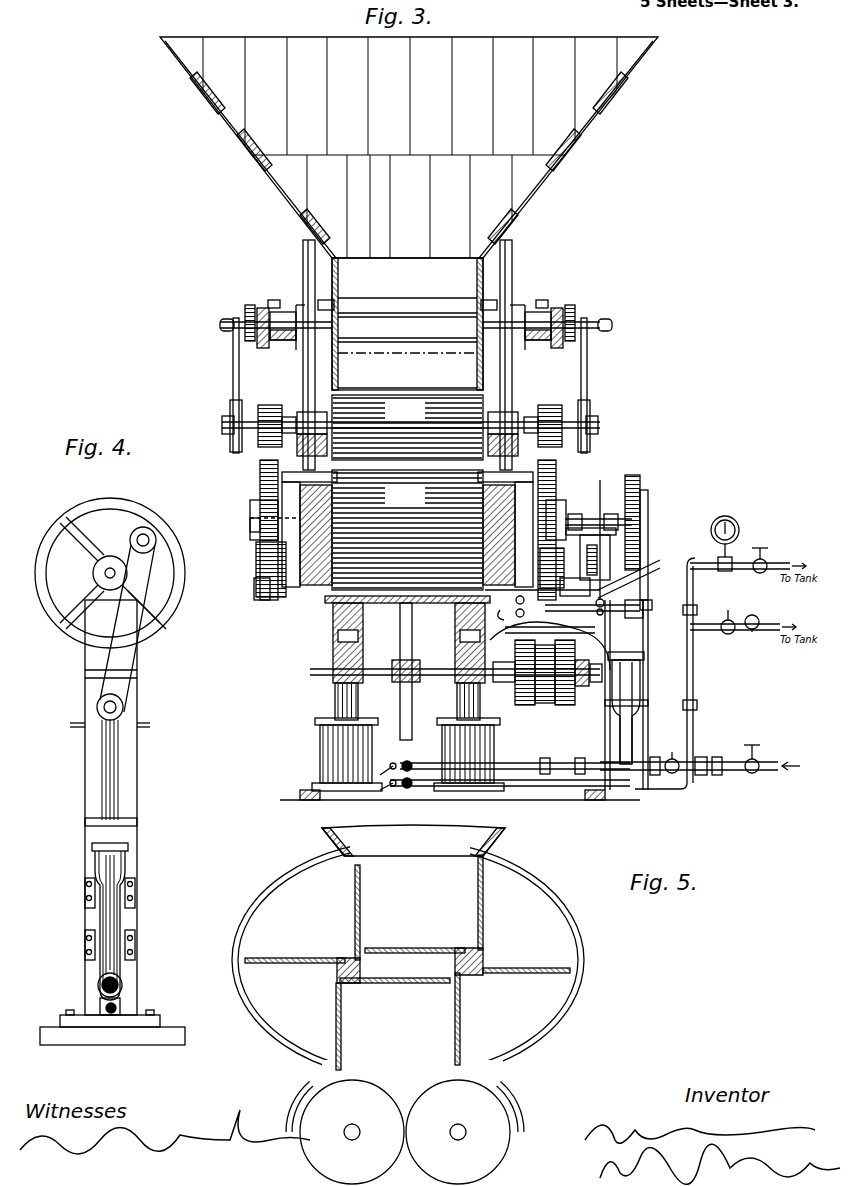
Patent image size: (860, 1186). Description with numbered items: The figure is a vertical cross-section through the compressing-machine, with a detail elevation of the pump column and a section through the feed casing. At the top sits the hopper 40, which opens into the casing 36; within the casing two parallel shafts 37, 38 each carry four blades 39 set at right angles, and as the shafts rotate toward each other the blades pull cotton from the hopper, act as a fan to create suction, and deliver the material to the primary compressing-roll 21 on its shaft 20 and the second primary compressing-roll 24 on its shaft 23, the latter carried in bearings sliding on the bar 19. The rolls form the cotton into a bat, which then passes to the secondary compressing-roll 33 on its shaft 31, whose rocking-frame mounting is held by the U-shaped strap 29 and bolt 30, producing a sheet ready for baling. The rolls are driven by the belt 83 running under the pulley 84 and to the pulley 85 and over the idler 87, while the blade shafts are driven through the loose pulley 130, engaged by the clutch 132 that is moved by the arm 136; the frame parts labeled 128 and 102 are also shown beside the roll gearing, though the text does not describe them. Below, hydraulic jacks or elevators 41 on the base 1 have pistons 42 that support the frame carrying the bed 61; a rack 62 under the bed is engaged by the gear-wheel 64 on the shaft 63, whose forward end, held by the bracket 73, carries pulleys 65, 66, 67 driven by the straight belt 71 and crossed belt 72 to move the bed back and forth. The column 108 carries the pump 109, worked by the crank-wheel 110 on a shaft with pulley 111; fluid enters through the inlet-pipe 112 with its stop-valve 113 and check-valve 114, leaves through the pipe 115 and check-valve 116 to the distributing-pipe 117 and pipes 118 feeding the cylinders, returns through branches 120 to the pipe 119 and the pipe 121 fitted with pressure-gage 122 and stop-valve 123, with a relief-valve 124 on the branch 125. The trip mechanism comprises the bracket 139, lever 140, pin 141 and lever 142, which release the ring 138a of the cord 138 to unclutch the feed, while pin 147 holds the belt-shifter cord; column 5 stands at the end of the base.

In FIG. 3, the base 1 is at (480, 796).
In FIG. 4, the base 1 is at (114, 1040).
In FIG. 3, the column 5 is at (482, 258).
In FIG. 3, the bar 19 is at (404, 439).
In FIG. 5, the shaft 20 is at (458, 1140).
In FIG. 3, the primary compressing-roll 21 is at (407, 427).
In FIG. 5, the primary compressing-roll 21 is at (458, 1132).
In FIG. 5, the shaft 23 is at (354, 1140).
In FIG. 5, the second primary compressing-roll 24 is at (352, 1132).
In FIG. 3, the U-shaped strap 29 is at (407, 535).
In FIG. 3, the bolt 30 is at (407, 528).
In FIG. 3, the shaft 31 is at (250, 526).
In FIG. 3, the secondary compressing-roll 33 is at (407, 530).
In FIG. 3, the casing 36 is at (485, 275).
In FIG. 5, the casing 36 is at (407, 986).
In FIG. 5, the shaft 37 is at (348, 958).
In FIG. 3, the shaft 38 is at (522, 300).
In FIG. 5, the shaft 38 is at (484, 955).
In FIG. 3, the blades 39 is at (407, 330).
In FIG. 5, the blades 39 is at (407, 962).
In FIG. 3, the hopper 40 is at (410, 130).
In FIG. 5, the hopper 40 is at (413, 840).
In FIG. 3, the hydraulic jacks or elevators 41 is at (397, 754).
In FIG. 3, the pistons 42 is at (394, 701).
In FIG. 3, the bed 61 is at (326, 602).
In FIG. 3, the rack 62 is at (416, 605).
In FIG. 3, the shaft 63 is at (438, 676).
In FIG. 3, the gear-wheel 64 is at (400, 700).
In FIG. 3, the pulley 65 is at (524, 705).
In FIG. 3, the intermediate pulley 66 is at (546, 704).
In FIG. 3, the pulley 67 is at (566, 705).
In FIG. 3, the straight belt 71 is at (590, 701).
In FIG. 3, the crossed belt 72 is at (516, 708).
In FIG. 3, the bracket 73 is at (550, 646).
In FIG. 3, the belt 83 is at (407, 528).
In FIG. 3, the pulley 84 is at (411, 416).
In FIG. 3, the pulley 85 is at (258, 510).
In FIG. 3, the idler 87 is at (260, 565).
In FIG. 3, the bracket 102 is at (256, 584).
In FIG. 3, the column 108 is at (606, 746).
In FIG. 4, the column 108 is at (128, 807).
In FIG. 3, the pump 109 is at (638, 708).
In FIG. 4, the pump 109 is at (105, 918).
In FIG. 3, the crank-wheel 110 is at (643, 532).
In FIG. 4, the crank-wheel 110 is at (107, 573).
In FIG. 3, the pulley 111 is at (566, 510).
In FIG. 3, the inlet-pipe 112 is at (730, 772).
In FIG. 4, the inlet-pipe 112 is at (122, 982).
In FIG. 3, the stop-valve 113 is at (770, 759).
In FIG. 3, the check-valve 114 is at (674, 774).
In FIG. 3, the pipe 115 is at (512, 770).
In FIG. 3, the check-valve 116 is at (578, 790).
In FIG. 3, the distributing-pipe 117 is at (420, 756).
In FIG. 3, the pipes 118 is at (391, 758).
In FIG. 3, the pipe 119 is at (408, 790).
In FIG. 3, the branches 120 is at (388, 790).
In FIG. 3, the pipe 121 is at (744, 572).
In FIG. 4, the pipe 121 is at (105, 1006).
In FIG. 3, the pressure-gage 122 is at (738, 532).
In FIG. 3, the stop-valve 123 is at (776, 556).
In FIG. 3, the relief-valve 124 is at (735, 635).
In FIG. 3, the branch 125 is at (770, 628).
In FIG. 3, the frame bar 128 is at (414, 385).
In FIG. 3, the pulley 130 is at (227, 320).
In FIG. 3, the clutch 132 is at (419, 308).
In FIG. 3, the arm 136 is at (552, 290).
In FIG. 3, the cord or chain 138 is at (593, 540).
In FIG. 3, the ring 138a is at (647, 565).
In FIG. 3, the bracket 139 is at (543, 583).
In FIG. 3, the lever 140 is at (599, 605).
In FIG. 3, the pin 141 is at (606, 610).
In FIG. 4, the pin 141 is at (66, 736).
In FIG. 3, the lever 142 is at (541, 617).
In FIG. 4, the pin 147 is at (150, 725).